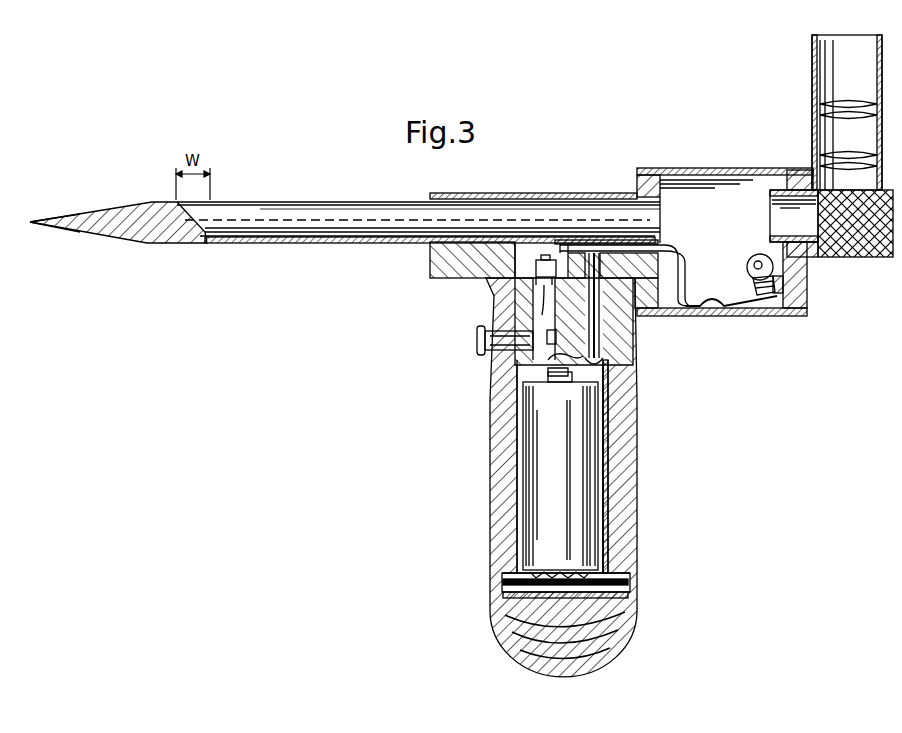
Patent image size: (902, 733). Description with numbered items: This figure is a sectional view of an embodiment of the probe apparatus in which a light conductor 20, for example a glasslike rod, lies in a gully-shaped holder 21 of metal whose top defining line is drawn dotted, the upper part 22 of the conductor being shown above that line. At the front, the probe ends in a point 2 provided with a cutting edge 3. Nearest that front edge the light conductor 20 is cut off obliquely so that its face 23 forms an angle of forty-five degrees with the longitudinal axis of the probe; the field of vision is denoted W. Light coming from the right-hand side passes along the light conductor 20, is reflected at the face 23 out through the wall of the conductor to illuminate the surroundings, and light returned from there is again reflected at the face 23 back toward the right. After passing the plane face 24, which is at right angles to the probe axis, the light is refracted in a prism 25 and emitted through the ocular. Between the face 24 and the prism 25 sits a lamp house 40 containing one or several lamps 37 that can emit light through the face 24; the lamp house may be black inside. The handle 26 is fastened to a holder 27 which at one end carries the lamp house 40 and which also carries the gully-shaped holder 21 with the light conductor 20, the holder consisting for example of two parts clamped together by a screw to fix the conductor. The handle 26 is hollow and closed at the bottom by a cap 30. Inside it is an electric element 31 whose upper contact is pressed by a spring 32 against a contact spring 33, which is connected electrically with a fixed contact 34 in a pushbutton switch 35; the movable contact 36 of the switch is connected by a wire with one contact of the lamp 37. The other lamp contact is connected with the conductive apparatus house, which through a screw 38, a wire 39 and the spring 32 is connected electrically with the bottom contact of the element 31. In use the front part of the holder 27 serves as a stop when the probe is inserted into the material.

The point 2 is at (129, 208).
The cutting edge 3 is at (83, 209).
The light conductor 20 is at (306, 207).
The gully-shaped holder 21 is at (270, 241).
The upper cladding strip 22 is at (261, 207).
The face 23 is at (204, 230).
The plane face 24 is at (664, 229).
The prism 25 is at (840, 195).
The handle 26 is at (628, 452).
The holder 27 is at (432, 257).
The cap 30 is at (507, 616).
The electric element 31 is at (568, 408).
The spring 32 is at (505, 583).
The contact spring 33 is at (555, 352).
The fixed contact 34 is at (547, 310).
The pushbutton switch 35 is at (478, 338).
The movable contact 36 is at (517, 308).
The lamp 37 is at (759, 256).
The screw 38 is at (605, 337).
The wire 39 is at (610, 392).
The lamp house 40 is at (750, 312).